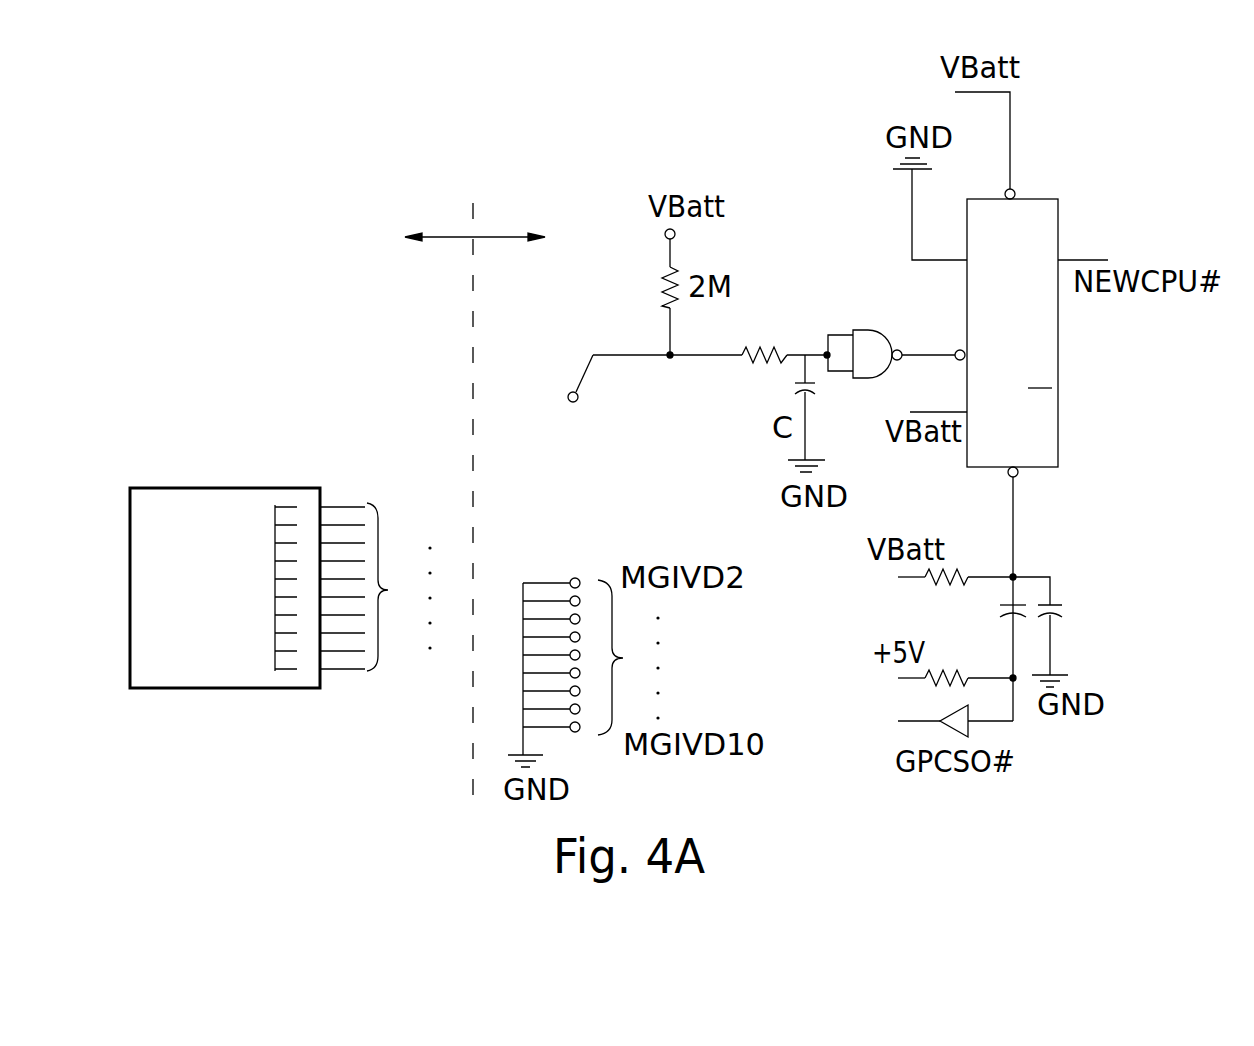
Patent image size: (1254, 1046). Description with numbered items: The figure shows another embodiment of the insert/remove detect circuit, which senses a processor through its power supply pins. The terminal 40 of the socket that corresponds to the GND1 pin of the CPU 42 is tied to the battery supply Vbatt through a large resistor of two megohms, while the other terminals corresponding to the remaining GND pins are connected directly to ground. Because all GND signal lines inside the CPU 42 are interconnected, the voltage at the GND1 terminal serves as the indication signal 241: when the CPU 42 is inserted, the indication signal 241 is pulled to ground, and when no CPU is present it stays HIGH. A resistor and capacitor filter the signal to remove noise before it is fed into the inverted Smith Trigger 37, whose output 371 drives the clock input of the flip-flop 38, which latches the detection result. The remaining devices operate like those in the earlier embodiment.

The CPU 42 is at (208, 624).
The terminal 40 is at (579, 397).
The indication signal 241 is at (730, 355).
The inverted Smith Trigger 37 is at (873, 330).
The NAND gate output connection 371 is at (946, 352).
The JK flip-flop 38 is at (1027, 327).